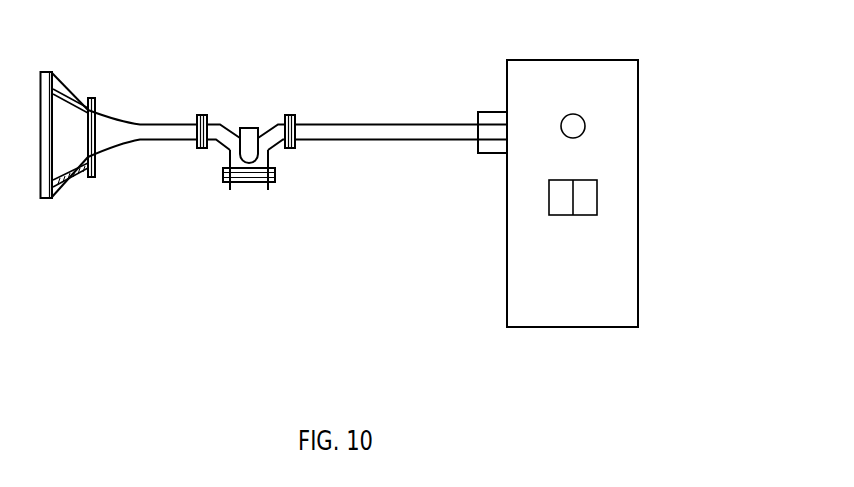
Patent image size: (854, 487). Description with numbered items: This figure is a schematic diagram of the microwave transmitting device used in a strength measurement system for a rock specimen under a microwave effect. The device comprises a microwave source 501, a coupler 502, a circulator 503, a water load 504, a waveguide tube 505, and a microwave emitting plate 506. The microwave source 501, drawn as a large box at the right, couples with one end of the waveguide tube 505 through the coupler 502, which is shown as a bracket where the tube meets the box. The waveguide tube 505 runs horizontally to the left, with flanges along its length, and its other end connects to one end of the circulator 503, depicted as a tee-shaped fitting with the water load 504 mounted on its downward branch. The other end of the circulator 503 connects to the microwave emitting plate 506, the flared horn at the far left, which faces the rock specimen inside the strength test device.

The microwave source 501 is at (625, 112).
The coupler 502 is at (492, 117).
The circulator 503 is at (257, 152).
The water load 504 is at (247, 187).
The waveguide tube 505 is at (352, 133).
The microwave emitting plate 506 is at (72, 123).